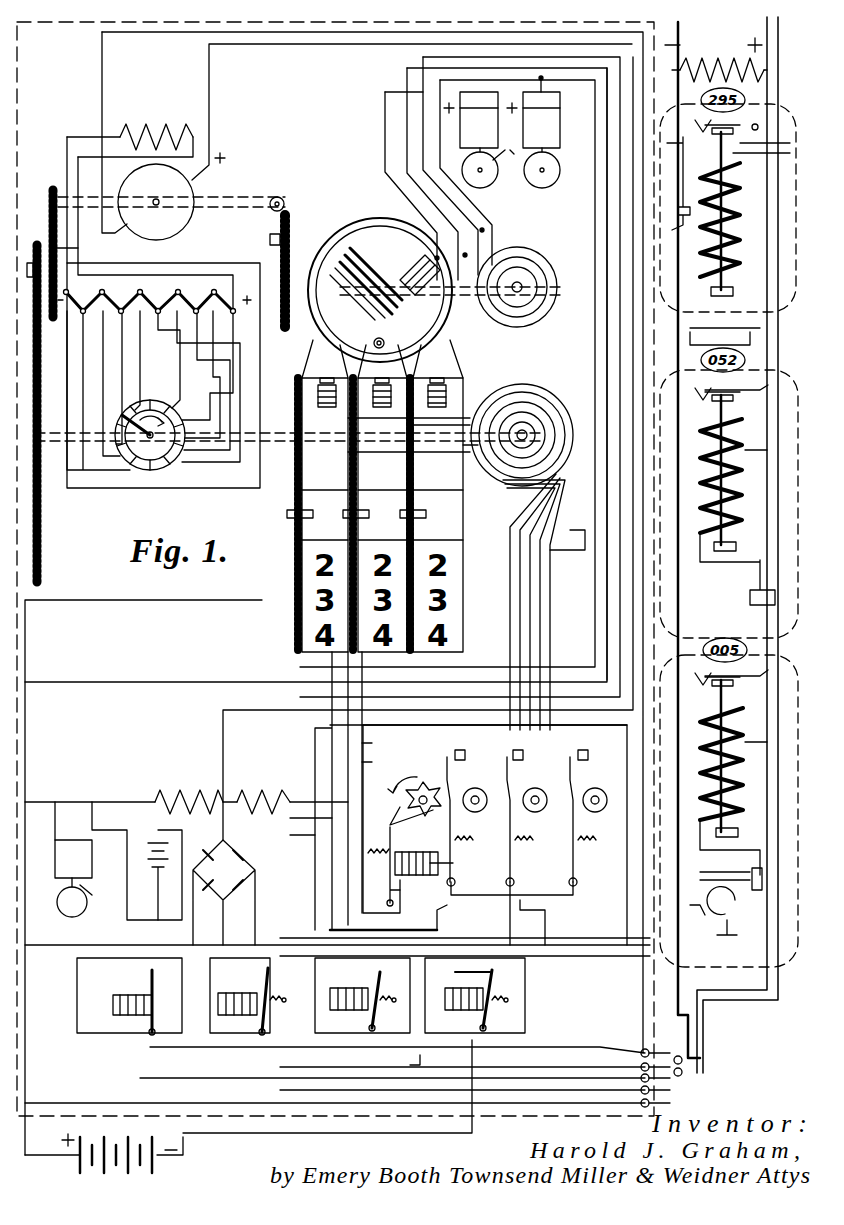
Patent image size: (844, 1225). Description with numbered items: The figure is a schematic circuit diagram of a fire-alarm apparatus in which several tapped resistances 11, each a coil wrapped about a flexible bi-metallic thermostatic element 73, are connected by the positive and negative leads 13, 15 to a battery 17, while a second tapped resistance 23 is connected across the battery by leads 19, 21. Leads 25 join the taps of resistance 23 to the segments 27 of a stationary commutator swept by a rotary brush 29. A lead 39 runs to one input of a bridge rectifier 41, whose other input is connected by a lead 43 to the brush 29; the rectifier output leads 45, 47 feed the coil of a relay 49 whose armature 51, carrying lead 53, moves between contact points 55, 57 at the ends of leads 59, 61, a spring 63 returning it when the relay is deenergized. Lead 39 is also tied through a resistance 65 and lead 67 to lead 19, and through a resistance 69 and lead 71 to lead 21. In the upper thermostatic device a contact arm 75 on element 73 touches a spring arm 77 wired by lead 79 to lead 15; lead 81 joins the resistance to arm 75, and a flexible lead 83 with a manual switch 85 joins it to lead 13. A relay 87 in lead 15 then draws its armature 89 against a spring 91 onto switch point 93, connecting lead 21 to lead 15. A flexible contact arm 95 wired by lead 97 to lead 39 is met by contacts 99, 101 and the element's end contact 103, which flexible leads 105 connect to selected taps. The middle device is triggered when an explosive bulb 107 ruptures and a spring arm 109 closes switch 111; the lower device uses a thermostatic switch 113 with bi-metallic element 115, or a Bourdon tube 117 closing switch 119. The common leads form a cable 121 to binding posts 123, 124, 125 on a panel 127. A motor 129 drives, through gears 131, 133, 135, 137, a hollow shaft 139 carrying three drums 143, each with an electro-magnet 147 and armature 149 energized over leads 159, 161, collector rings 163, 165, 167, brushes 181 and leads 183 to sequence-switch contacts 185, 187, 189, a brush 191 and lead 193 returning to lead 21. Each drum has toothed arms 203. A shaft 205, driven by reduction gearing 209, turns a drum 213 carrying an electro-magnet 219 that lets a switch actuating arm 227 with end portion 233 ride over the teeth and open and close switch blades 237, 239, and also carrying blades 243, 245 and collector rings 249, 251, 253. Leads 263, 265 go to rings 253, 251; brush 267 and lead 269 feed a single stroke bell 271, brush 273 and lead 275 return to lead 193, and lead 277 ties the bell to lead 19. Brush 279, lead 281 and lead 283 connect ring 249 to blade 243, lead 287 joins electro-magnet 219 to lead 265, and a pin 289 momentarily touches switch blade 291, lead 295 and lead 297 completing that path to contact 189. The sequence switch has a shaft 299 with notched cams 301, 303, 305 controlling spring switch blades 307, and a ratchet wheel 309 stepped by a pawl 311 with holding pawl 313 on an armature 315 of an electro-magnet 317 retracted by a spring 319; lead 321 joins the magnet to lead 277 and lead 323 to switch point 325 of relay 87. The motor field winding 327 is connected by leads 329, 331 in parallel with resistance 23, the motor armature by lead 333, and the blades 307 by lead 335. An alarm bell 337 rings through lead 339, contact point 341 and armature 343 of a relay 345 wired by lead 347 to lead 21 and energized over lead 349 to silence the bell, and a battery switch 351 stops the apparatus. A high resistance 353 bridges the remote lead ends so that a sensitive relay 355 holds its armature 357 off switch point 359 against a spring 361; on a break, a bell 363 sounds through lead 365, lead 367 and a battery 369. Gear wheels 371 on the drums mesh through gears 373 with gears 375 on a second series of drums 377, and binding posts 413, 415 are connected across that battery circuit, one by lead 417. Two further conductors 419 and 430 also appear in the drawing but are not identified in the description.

The contact 11 is at (740, 240).
The conductor 13 is at (40, 1047).
The conductor 15 is at (480, 1040).
The battery 17 is at (80, 1175).
The conductor 19 is at (260, 350).
The conductor 21 is at (195, 270).
The stepping switch contacts 23 is at (168, 290).
The conductor 25 is at (65, 368).
The pointer arm 27 is at (152, 472).
The indicating dial 29 is at (151, 437).
The conductor 39 is at (223, 745).
The rectifier 41 is at (245, 860).
The conductor 43 is at (452, 450).
The rectifier element 45 is at (193, 907).
The rectifier element 47 is at (258, 905).
The relay coil 49 is at (235, 1015).
The relay contact 51 is at (285, 1015).
The conductor 53 is at (265, 1045).
The relay 55 is at (250, 965).
The relay armature 57 is at (275, 985).
The conductor 59 is at (102, 74).
The conductor 61 is at (315, 932).
The spring 63 is at (275, 1000).
The resistor 65 is at (192, 792).
The conductor 67 is at (125, 802).
The resistor 69 is at (258, 792).
The conductor 71 is at (295, 798).
The contact block 73 is at (751, 293).
The brush 75 is at (692, 160).
The conductor 77 is at (658, 142).
The conductor 79 is at (672, 230).
The selector unit 81 is at (770, 155).
The conductor 83 is at (692, 336).
The conductor 85 is at (735, 340).
The relay coil 87 is at (458, 1012).
The spring 89 is at (512, 998).
The contact 91 is at (495, 1005).
The relay armature 93 is at (480, 978).
The conductor 95 is at (690, 125).
The conductor 97 is at (775, 112).
The contact 99 is at (695, 118).
The conductor 101 is at (794, 143).
The contact 103 is at (745, 130).
The contact 105 is at (702, 332).
The block 107 is at (760, 622).
The conductor 109 is at (770, 590).
The conductor 111 is at (698, 622).
The contact strip 113 is at (720, 885).
The contact 115 is at (715, 872).
The block 117 is at (740, 905).
The hook member 119 is at (702, 913).
The terminal 121 is at (682, 1076).
The terminal 123 is at (645, 1078).
The terminal 124 is at (645, 1067).
The terminal 125 is at (645, 1053).
The conductor 127 is at (512, 1128).
The motor 129 is at (180, 222).
The rack 131 is at (52, 190).
The conductor 133 is at (70, 248).
The rack 135 is at (37, 250).
The conductor 137 is at (40, 480).
The conductor 139 is at (80, 472).
The conductor 143 is at (460, 490).
The relay housing 147 is at (302, 410).
The relay 149 is at (322, 380).
The coil 159 is at (500, 400).
The relay 161 is at (336, 450).
The coil winding 163 is at (515, 390).
The coil winding 165 is at (530, 395).
The coil winding 167 is at (540, 405).
The conductor 181 is at (498, 478).
The conductor 183 is at (530, 610).
The pawl 185 is at (466, 755).
The pawl 187 is at (523, 755).
The pawl 189 is at (588, 750).
The conductor 191 is at (527, 478).
The conductor 193 is at (545, 612).
The conductor 203 is at (282, 318).
The shaft 205 is at (380, 285).
The gear 209 is at (285, 200).
The drum 213 is at (375, 218).
The conductor 219 is at (462, 170).
The rack 227 is at (269, 302).
The rack 233 is at (276, 272).
The conductor 237 is at (318, 280).
The ring 239 is at (344, 212).
The armature 243 is at (366, 272).
The coil 245 is at (409, 267).
The conductor 249 is at (522, 328).
The conductor 251 is at (548, 314).
The ring 253 is at (553, 298).
The conductor 263 is at (468, 340).
The conductor 265 is at (511, 357).
The conductor 267 is at (500, 230).
The conductor 269 is at (385, 128).
The relay 271 is at (471, 168).
The conductor 273 is at (515, 240).
The conductor 275 is at (385, 108).
The conductor 277 is at (490, 44).
The conductor 279 is at (540, 252).
The single stroke relay 281 is at (440, 165).
The conductor 283 is at (541, 355).
The conductor 287 is at (436, 378).
The conductor 289 is at (480, 228).
The conductor 291 is at (469, 200).
The ring 295 is at (399, 212).
The conductor 297 is at (570, 560).
The spring 299 is at (525, 844).
The ratchet wheel 301 is at (474, 825).
The ratchet wheel 303 is at (532, 828).
The ratchet wheel 305 is at (586, 828).
The pawl arm 307 is at (447, 760).
The ratchet wheel 309 is at (405, 798).
The pawl 311 is at (408, 826).
The arm 313 is at (400, 815).
The magnet coil 315 is at (419, 892).
The armature 317 is at (469, 865).
The spring 319 is at (393, 865).
The conductor 321 is at (389, 743).
The conductor 323 is at (474, 907).
The conductor 325 is at (495, 980).
The resistor 327 is at (152, 124).
The conductor 329 is at (67, 150).
The conductor 331 is at (78, 157).
The conductor 333 is at (209, 74).
The conductor 335 is at (540, 920).
The relay 337 is at (555, 108).
The conductor 339 is at (548, 148).
The relay 341 is at (378, 972).
The armature 343 is at (378, 1000).
The conductor 345 is at (350, 1025).
The conductor 347 is at (400, 1064).
The conductor 349 is at (462, 727).
The conductor 351 is at (236, 1140).
The resistor 353 is at (722, 58).
The relay coil 355 is at (130, 995).
The contact 357 is at (153, 1033).
The armature 359 is at (155, 975).
The spring 361 is at (155, 1010).
The relay 363 is at (82, 872).
The conductor 365 is at (55, 800).
The conductor 367 is at (92, 800).
The battery 369 is at (150, 875).
The conductor 371 is at (297, 495).
The contact 373 is at (300, 518).
The conductor 375 is at (302, 625).
The conductor 377 is at (302, 640).
The terminal 413 is at (665, 1090).
The terminal 415 is at (665, 1103).
The conductor 417 is at (125, 915).
The conductor 419 is at (155, 1063).
The conductor 430 is at (500, 475).